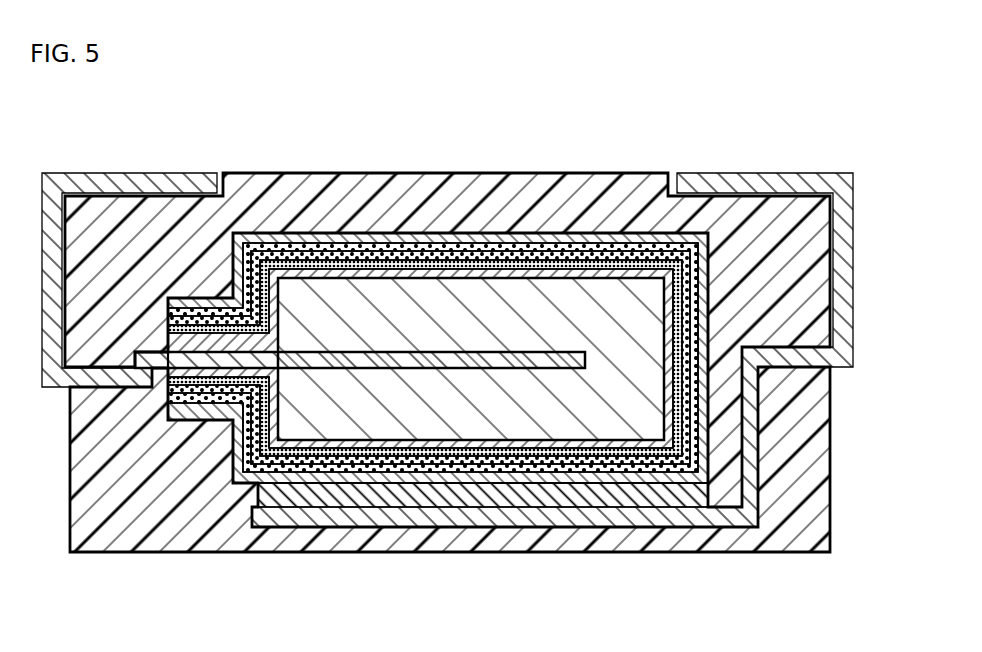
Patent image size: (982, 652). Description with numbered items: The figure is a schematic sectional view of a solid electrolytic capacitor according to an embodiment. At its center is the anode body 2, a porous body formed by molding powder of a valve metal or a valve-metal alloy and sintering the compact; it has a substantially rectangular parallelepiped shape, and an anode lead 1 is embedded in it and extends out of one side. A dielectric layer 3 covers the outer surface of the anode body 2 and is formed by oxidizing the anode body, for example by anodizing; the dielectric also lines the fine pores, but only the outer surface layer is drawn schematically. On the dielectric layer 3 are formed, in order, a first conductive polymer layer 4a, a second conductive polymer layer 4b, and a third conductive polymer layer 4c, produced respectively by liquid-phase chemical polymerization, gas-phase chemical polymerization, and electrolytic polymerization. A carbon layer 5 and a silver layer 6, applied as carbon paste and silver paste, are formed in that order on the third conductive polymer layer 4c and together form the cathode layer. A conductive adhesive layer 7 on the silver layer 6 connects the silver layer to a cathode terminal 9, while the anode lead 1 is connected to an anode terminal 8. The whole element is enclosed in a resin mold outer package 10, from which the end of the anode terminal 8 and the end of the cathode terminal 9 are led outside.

The anode lead 1 is at (400, 362).
The anode body 2 is at (502, 410).
The dielectric layer 3 is at (301, 272).
The first conductive polymer layer 4a is at (352, 266).
The second conductive polymer layer 4b is at (400, 258).
The third conductive polymer layer 4c is at (453, 250).
The carbon layer 5 is at (575, 237).
The silver layer 6 is at (632, 237).
The conductive adhesive layer 7 is at (612, 508).
The anode terminal 8 is at (106, 378).
The cathode terminal 9 is at (705, 515).
The resin mold outer package 10 is at (200, 517).